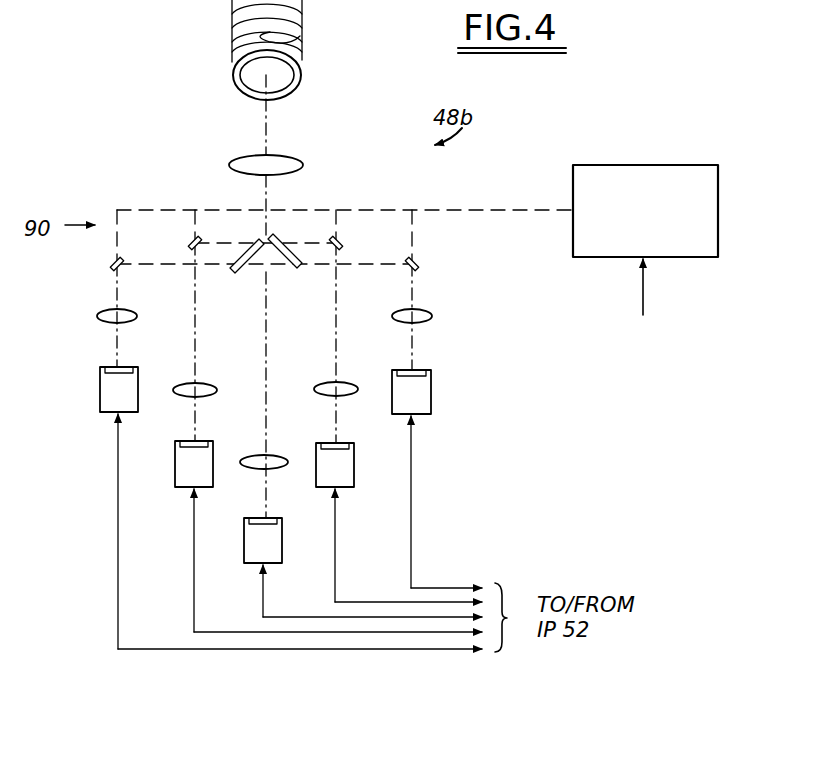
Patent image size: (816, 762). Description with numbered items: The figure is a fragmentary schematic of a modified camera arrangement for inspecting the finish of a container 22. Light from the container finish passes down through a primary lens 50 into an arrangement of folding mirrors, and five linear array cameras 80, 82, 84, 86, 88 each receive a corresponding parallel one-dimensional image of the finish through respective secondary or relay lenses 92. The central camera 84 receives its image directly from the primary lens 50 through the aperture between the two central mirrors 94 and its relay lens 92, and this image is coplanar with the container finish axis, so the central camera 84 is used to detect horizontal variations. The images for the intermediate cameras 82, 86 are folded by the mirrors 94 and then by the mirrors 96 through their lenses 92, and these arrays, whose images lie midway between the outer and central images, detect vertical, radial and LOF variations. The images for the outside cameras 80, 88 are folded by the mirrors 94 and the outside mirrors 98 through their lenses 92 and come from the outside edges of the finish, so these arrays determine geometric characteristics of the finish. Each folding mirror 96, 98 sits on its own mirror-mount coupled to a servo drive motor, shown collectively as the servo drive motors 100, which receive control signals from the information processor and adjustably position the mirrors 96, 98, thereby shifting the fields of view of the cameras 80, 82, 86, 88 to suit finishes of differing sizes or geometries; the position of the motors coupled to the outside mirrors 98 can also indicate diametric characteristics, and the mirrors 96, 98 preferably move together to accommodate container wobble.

The container 22 is at (302, 62).
The primary lens 50 is at (290, 163).
The folding mirrors 96 is at (188, 240).
The folding mirrors 98 is at (112, 267).
The mirrors 94 is at (282, 265).
The secondary or relay lenses 92 is at (270, 453).
The linear array camera 80 is at (100, 388).
The linear array camera 82 is at (181, 489).
The linear array camera 84 is at (282, 553).
The linear array camera 86 is at (354, 487).
The linear array camera 88 is at (431, 402).
The servo drive motors 100 is at (635, 165).